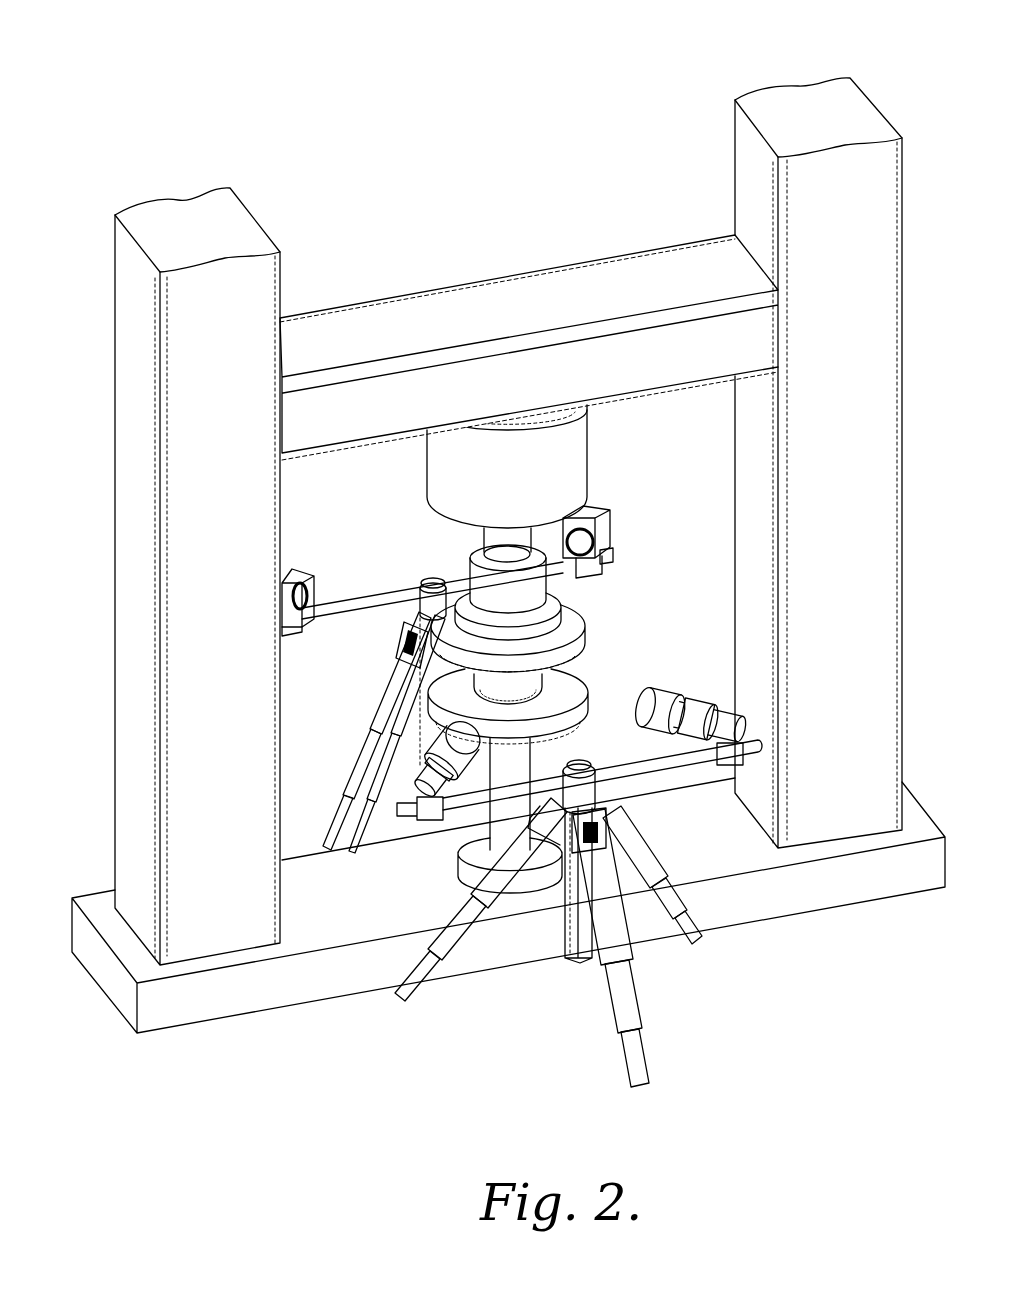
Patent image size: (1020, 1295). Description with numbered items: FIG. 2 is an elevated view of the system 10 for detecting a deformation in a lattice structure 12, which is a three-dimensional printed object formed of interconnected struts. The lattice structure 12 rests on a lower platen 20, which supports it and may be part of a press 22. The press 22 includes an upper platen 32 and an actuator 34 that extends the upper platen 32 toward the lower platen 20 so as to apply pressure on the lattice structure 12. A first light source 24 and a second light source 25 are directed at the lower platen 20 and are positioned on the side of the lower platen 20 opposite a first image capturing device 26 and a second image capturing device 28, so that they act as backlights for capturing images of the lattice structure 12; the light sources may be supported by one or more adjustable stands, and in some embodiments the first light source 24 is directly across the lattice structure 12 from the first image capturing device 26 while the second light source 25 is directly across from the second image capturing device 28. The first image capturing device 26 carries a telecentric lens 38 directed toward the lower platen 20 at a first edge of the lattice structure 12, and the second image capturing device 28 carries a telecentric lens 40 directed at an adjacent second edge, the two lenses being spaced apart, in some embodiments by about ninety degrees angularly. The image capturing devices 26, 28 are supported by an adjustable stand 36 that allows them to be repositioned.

The system 10 is at (499, 519).
The press 22 is at (133, 297).
The actuator 34 is at (515, 537).
The upper platen 32 is at (587, 645).
The lower platen 20 is at (585, 702).
The lattice structure 12 is at (517, 687).
The first light source 24 is at (578, 542).
The second light source 25 is at (307, 597).
The telecentric lens 38 is at (658, 695).
The first image capturing device 26 is at (723, 730).
The telecentric lens 40 is at (455, 732).
The second image capturing device 28 is at (420, 788).
The adjustable stand 36 is at (648, 766).